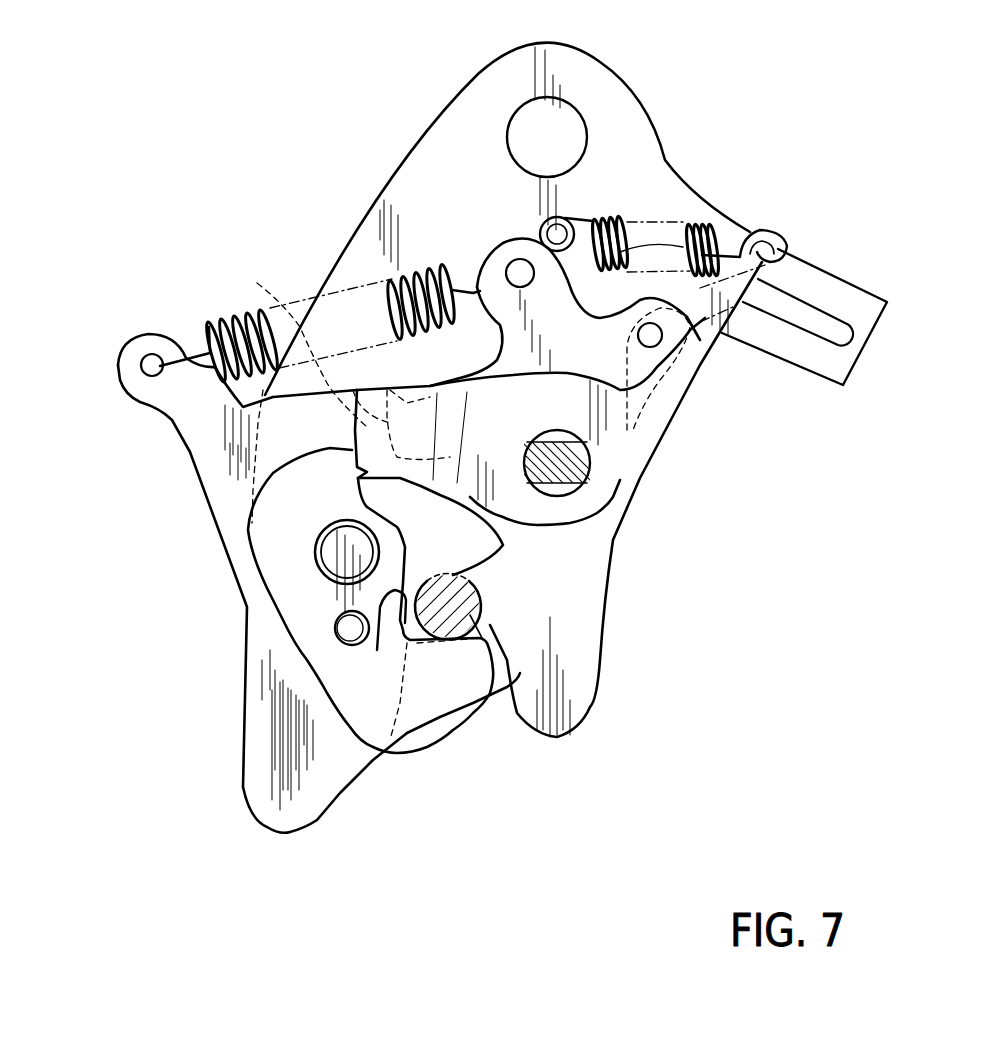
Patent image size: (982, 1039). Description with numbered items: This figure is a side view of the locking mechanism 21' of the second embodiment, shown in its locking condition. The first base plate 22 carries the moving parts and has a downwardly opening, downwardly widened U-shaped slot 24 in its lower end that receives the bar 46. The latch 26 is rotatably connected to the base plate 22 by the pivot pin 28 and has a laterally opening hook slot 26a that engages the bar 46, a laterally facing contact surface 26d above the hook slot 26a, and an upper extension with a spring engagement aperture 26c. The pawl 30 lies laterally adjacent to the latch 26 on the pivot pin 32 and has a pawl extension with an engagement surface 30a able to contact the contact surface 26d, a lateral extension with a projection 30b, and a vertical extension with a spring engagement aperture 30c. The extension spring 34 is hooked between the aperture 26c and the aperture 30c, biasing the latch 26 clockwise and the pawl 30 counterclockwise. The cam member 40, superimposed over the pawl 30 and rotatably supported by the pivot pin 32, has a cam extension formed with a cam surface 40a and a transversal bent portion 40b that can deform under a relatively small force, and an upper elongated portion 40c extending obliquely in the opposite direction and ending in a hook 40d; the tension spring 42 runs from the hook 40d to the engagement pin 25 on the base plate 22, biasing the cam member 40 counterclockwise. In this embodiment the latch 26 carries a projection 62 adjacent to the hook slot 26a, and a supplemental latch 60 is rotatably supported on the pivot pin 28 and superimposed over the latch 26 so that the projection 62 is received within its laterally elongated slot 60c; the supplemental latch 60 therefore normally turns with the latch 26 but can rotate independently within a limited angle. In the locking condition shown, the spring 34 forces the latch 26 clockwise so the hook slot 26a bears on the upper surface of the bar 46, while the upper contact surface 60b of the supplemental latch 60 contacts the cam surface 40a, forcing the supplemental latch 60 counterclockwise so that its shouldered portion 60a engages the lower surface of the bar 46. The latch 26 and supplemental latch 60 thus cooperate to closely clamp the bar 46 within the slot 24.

The locking mechanism 21' is at (456, 465).
The first base plate 22 is at (435, 165).
The U-shaped slot 24 is at (452, 620).
The engagement pin 25 is at (565, 225).
The latch 26 is at (265, 545).
The hook slot 26a is at (390, 600).
The spring engagement aperture 26c is at (135, 366).
The contact surface 26d is at (257, 283).
The pivot pin 28 is at (365, 549).
The pawl 30 is at (552, 285).
The engagement surface 30a is at (363, 400).
The projection 30b is at (655, 340).
The spring engagement aperture 30c is at (512, 265).
The pivot pin 32 is at (576, 485).
The extension spring 34 is at (210, 316).
The cam member 40 is at (506, 456).
The cam surface 40a is at (350, 427).
The bent portion 40b is at (455, 438).
The upper elongated portion 40c is at (670, 390).
The hook 40d is at (780, 258).
The tension spring 42 is at (652, 227).
The bar 46 is at (478, 572).
The supplemental latch 60 is at (314, 638).
The shouldered portion 60a is at (420, 627).
The upper contact surface 60b is at (357, 473).
The elongated slot 60c is at (317, 633).
The projection 62 is at (350, 633).